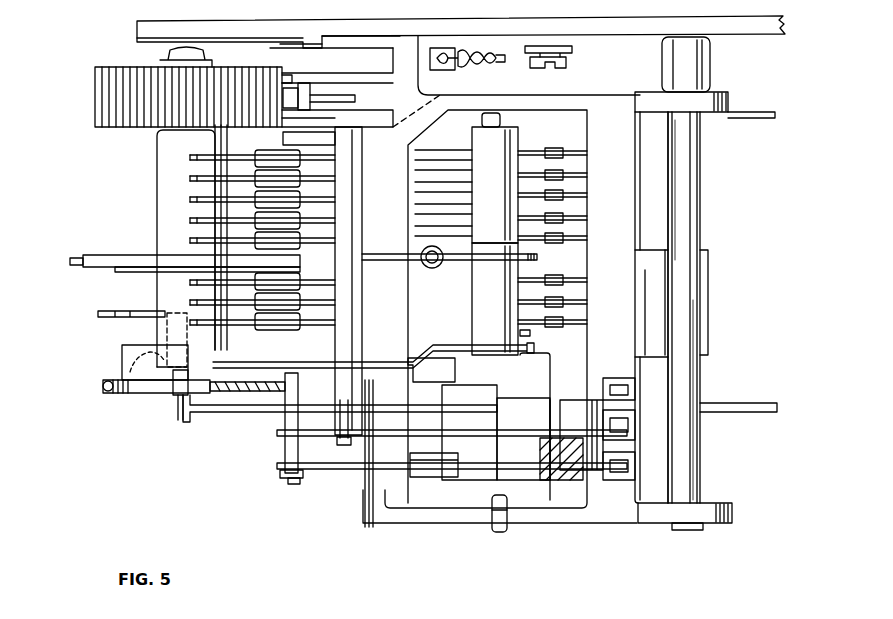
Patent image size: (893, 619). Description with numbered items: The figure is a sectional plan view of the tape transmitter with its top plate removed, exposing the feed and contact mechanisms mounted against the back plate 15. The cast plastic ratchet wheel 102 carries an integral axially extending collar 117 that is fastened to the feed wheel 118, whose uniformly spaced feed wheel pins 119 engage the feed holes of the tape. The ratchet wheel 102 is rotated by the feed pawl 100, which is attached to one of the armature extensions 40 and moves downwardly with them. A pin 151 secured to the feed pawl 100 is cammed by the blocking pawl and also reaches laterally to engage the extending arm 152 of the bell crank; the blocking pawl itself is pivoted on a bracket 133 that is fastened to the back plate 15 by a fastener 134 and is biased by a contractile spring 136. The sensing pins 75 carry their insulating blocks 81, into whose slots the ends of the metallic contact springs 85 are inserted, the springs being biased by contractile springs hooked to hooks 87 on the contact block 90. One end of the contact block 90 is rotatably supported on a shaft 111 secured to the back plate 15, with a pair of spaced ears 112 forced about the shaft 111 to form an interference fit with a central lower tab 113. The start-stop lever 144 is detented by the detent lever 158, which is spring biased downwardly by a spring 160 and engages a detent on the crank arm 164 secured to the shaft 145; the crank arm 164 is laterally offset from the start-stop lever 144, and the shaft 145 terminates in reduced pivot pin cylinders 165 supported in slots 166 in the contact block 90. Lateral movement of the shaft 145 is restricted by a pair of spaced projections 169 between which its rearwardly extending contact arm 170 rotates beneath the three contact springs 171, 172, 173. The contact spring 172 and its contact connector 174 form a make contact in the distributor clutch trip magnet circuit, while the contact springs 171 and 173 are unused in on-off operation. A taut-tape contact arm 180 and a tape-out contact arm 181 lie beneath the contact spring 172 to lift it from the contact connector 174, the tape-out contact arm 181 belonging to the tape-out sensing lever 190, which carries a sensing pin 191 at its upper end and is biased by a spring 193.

The back plate 15 is at (231, 22).
The extending arm 152 is at (346, 90).
The ratchet wheel 102 is at (95, 80).
The feed pawl 100 is at (345, 112).
The pin 151 is at (305, 97).
The contractile spring 136 is at (490, 60).
The bracket 133 is at (583, 44).
The fastener 134 is at (566, 60).
The spaced ears 112 is at (712, 95).
The armature extensions 40 is at (752, 116).
The shaft 111 is at (700, 176).
The contact block 90 is at (655, 226).
The central lower tab 113 is at (708, 257).
The contact springs 85 is at (450, 175).
The detent lever 158 is at (462, 255).
The crank arm 164 is at (500, 270).
The reduced pivot pin cylinders 165 is at (490, 120).
The hooks 87 is at (575, 196).
The collar 117 is at (157, 155).
The sensing pins 75 is at (192, 178).
The insulating blocks 81 is at (287, 175).
The feed wheel 118 is at (133, 254).
The feed wheel pins 119 is at (74, 260).
The spring 160 is at (420, 282).
The tape-out sensing lever 190 is at (356, 365).
The shaft 145 is at (530, 333).
The sensing pin 191 is at (100, 312).
The spring 193 is at (105, 380).
The tape-out contact arm 181 is at (283, 420).
The contact spring 171 is at (285, 430).
The contact spring 172 is at (285, 455).
The contact spring 173 is at (292, 474).
The taut-tape contact arm 180 is at (343, 445).
The contact connector 174 is at (374, 430).
The spaced projections 169 is at (455, 370).
The contact arm 170 is at (488, 420).
The start-stop lever 144 is at (578, 482).
The slots 166 is at (507, 515).